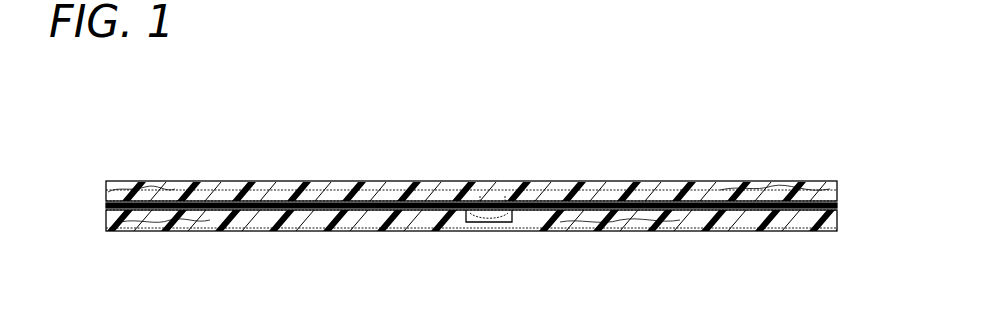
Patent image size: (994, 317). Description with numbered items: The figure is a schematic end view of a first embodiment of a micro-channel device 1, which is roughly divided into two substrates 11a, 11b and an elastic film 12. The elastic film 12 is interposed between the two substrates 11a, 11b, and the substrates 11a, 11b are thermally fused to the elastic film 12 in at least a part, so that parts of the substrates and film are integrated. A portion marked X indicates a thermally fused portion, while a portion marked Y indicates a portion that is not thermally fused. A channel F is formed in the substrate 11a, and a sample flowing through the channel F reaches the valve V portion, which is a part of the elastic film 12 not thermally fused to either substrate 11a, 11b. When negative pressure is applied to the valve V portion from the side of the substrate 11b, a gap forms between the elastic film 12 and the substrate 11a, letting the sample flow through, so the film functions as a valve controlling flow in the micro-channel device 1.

The micro-channel device 1 is at (742, 128).
The substrate 11a is at (833, 187).
The substrate 11b is at (830, 224).
The elastic film 12 is at (108, 206).
The channel F is at (280, 185).
The valve portion V is at (498, 201).
The thermally fused portion X is at (133, 182).
The non-thermally-fused portion Y is at (430, 182).